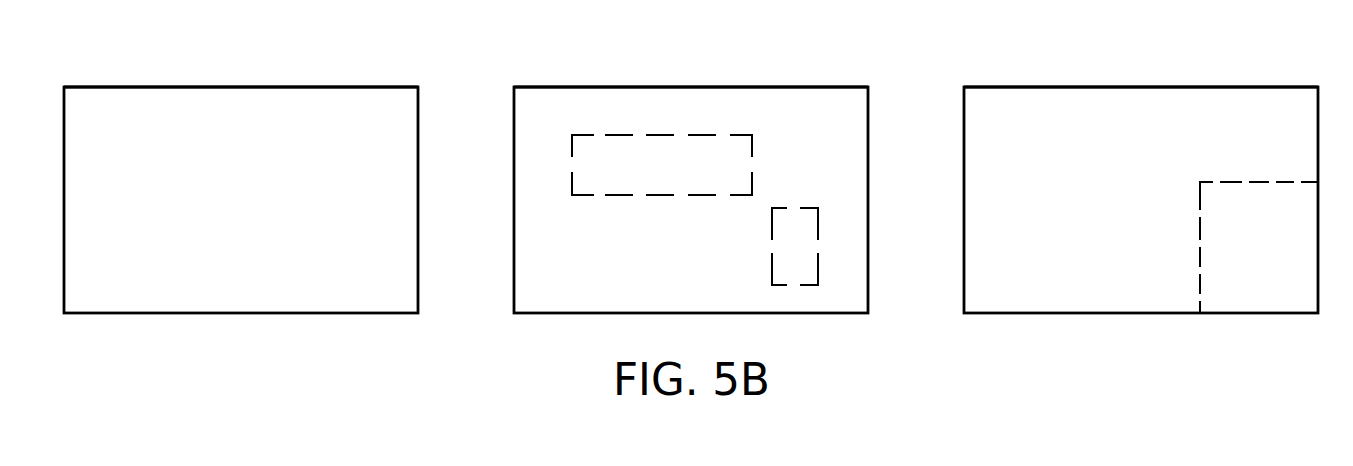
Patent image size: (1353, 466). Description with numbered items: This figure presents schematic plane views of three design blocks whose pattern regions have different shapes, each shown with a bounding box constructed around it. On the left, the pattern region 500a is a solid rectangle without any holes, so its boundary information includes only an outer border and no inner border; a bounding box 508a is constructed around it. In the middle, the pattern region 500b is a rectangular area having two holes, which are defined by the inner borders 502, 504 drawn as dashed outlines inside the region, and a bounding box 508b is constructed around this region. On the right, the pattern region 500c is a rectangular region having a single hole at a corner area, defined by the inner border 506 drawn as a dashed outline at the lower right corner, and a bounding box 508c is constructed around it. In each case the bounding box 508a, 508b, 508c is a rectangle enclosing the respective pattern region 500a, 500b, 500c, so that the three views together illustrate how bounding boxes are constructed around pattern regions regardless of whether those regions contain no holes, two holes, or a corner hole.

The pattern region 500a is at (140, 305).
The pattern region 500b is at (590, 305).
The pattern region 500c is at (1040, 305).
The inner border 502 is at (685, 179).
The inner border 504 is at (795, 220).
The inner border 506 is at (1283, 263).
The bounding box 508a is at (120, 86).
The bounding box 508b is at (570, 86).
The bounding box 508c is at (1020, 86).